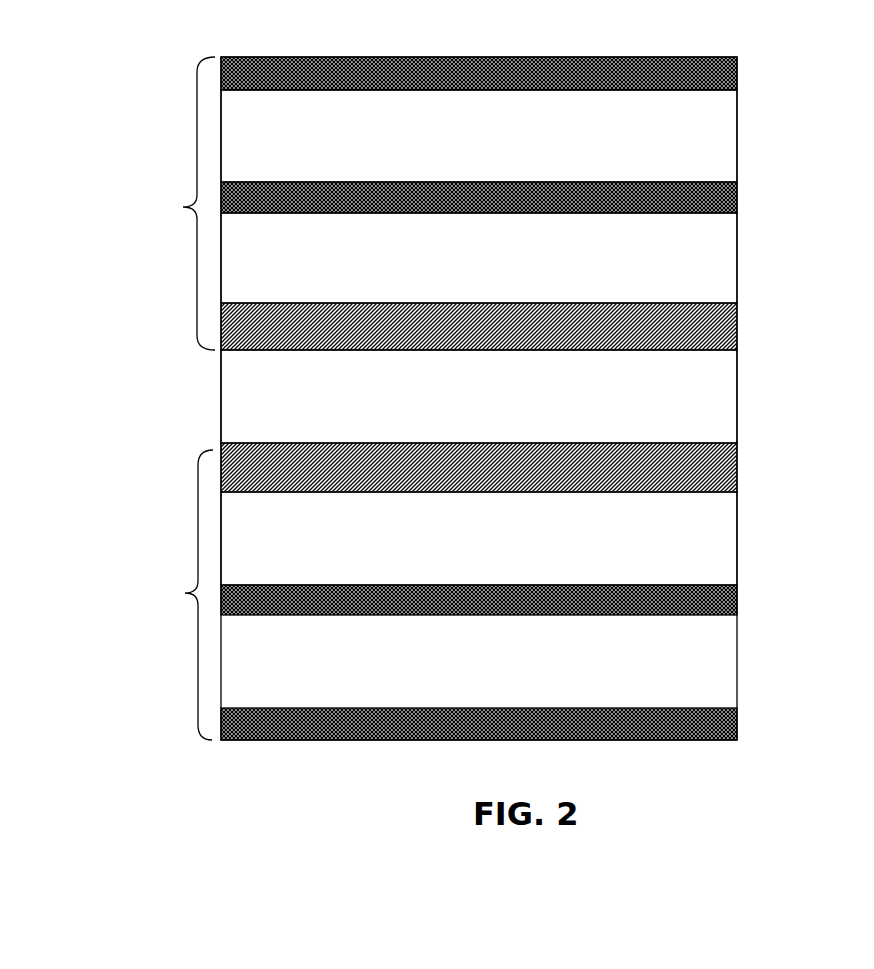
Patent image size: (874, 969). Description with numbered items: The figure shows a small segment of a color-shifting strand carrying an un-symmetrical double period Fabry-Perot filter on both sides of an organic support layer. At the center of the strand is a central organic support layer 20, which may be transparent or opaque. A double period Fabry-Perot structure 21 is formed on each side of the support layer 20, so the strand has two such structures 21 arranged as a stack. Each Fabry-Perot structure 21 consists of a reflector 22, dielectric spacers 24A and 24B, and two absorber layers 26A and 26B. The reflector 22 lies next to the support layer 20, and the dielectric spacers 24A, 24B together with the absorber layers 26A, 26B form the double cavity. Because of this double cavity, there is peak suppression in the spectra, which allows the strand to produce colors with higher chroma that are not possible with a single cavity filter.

The central organic support layer 20 is at (221, 400).
The double period Fabry-Perot structure 21 is at (174, 398).
The reflector 22 is at (737, 332).
The dielectric spacer 24A is at (737, 248).
The dielectric spacer 24B is at (737, 125).
The absorber layer 26A is at (737, 197).
The absorber layer 26B is at (708, 57).